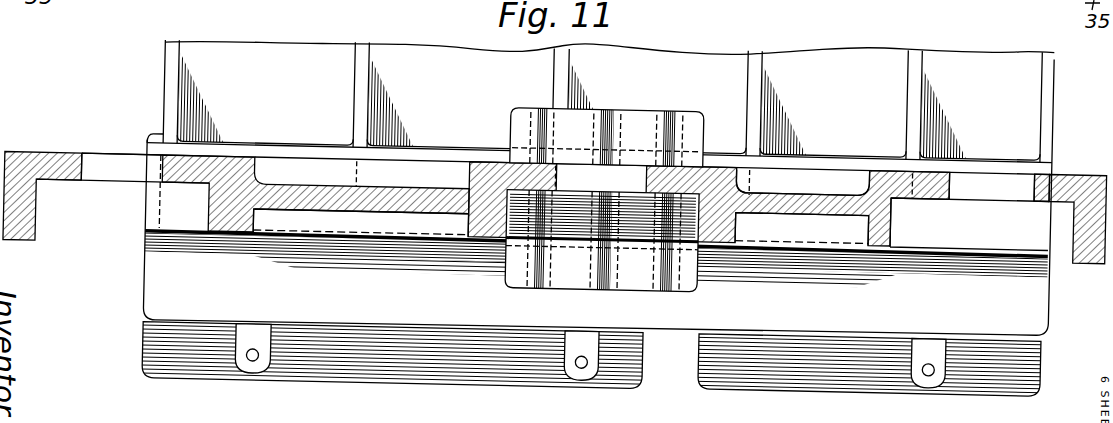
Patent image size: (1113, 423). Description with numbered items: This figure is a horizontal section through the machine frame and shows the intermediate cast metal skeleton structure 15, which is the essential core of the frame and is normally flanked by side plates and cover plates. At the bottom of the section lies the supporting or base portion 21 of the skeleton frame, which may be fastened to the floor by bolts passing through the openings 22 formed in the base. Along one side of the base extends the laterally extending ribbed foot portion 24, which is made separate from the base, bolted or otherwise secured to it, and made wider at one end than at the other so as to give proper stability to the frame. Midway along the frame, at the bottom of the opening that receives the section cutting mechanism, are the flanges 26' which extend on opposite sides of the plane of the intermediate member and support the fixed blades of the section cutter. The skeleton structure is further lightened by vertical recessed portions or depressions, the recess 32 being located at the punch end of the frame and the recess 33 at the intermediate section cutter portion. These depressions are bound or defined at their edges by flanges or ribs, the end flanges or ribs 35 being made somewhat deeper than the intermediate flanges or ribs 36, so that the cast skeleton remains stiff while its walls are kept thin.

The intermediate cast metal skeleton structure 15 is at (818, 178).
The base portion 21 is at (453, 322).
The openings 22 is at (257, 353).
The ribbed foot portion 24 is at (862, 47).
The flanges 26' is at (605, 182).
The vertical recessed portion 32 is at (118, 190).
The vertical recessed portion 33 is at (517, 187).
The end flanges or ribs 35 is at (36, 246).
The intermediate flanges or ribs 36 is at (253, 216).